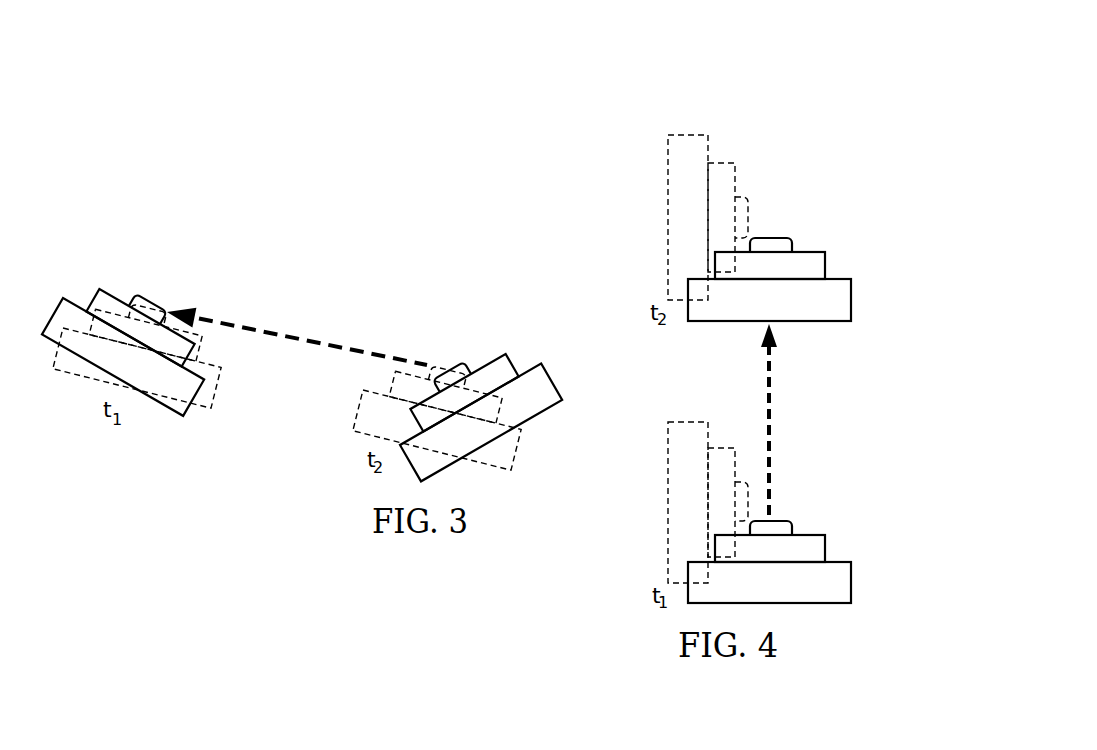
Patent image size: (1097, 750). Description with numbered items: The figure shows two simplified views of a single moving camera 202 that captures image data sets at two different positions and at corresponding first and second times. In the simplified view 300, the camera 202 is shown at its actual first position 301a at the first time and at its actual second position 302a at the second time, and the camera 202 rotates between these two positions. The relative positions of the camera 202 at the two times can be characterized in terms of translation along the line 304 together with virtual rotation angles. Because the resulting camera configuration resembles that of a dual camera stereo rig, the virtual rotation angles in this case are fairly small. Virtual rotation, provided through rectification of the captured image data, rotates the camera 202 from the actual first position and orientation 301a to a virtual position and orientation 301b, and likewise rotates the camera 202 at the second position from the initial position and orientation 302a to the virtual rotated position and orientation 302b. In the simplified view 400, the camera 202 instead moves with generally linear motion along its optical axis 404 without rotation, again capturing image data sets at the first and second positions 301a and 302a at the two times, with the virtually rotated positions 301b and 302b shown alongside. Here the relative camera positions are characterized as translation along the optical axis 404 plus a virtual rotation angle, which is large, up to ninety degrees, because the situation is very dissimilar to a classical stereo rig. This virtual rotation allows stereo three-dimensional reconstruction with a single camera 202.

In FIG. 3, the simplified view 300 is at (300, 307).
In FIG. 3, the camera 202 is at (300, 340).
In FIG. 4, the camera 202 is at (775, 370).
In FIG. 3, the first position 301a is at (92, 297).
In FIG. 4, the first position 301a is at (820, 603).
In FIG. 3, the virtual position and orientation 301b is at (213, 394).
In FIG. 4, the virtual position and orientation 301b is at (690, 422).
In FIG. 3, the second position 302a is at (513, 368).
In FIG. 4, the second position 302a is at (777, 237).
In FIG. 3, the virtual rotated position and orientation 302b is at (362, 393).
In FIG. 4, the virtual rotated position and orientation 302b is at (690, 135).
In FIG. 3, the line 304 is at (323, 340).
In FIG. 4, the simplified view 400 is at (756, 333).
In FIG. 4, the optical axis 404 is at (772, 435).